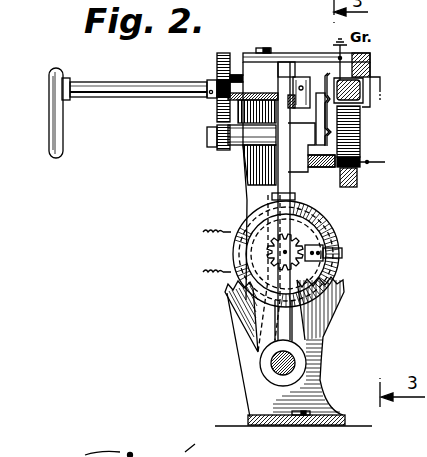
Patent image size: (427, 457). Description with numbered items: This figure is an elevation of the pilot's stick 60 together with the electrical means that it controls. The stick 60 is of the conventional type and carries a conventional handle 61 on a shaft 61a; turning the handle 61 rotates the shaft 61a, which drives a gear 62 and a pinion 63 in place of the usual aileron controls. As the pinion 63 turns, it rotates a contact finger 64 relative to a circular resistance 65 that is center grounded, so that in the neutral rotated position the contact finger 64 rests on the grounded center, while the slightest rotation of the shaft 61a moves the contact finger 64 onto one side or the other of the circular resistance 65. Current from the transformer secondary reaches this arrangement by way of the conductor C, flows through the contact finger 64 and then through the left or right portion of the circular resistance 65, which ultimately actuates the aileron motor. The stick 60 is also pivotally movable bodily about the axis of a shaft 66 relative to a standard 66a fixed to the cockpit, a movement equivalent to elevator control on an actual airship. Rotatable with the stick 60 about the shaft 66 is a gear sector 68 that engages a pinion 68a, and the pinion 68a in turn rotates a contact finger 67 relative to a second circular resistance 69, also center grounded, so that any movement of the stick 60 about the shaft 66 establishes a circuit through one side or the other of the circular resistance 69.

The stick 60 is at (213, 112).
The handle 61 is at (49, 135).
The shaft 61a is at (131, 82).
The gear 62 is at (223, 53).
The pinion 63 is at (217, 140).
The contact finger 64 is at (328, 75).
The circular resistance 65 is at (361, 128).
The shaft 66 is at (273, 367).
The standard 66a is at (263, 408).
The contact finger 67 is at (343, 253).
The gear sector 68 is at (228, 298).
The pinion 68a is at (240, 259).
The circular resistance 69 is at (331, 222).
The conductor C is at (385, 162).